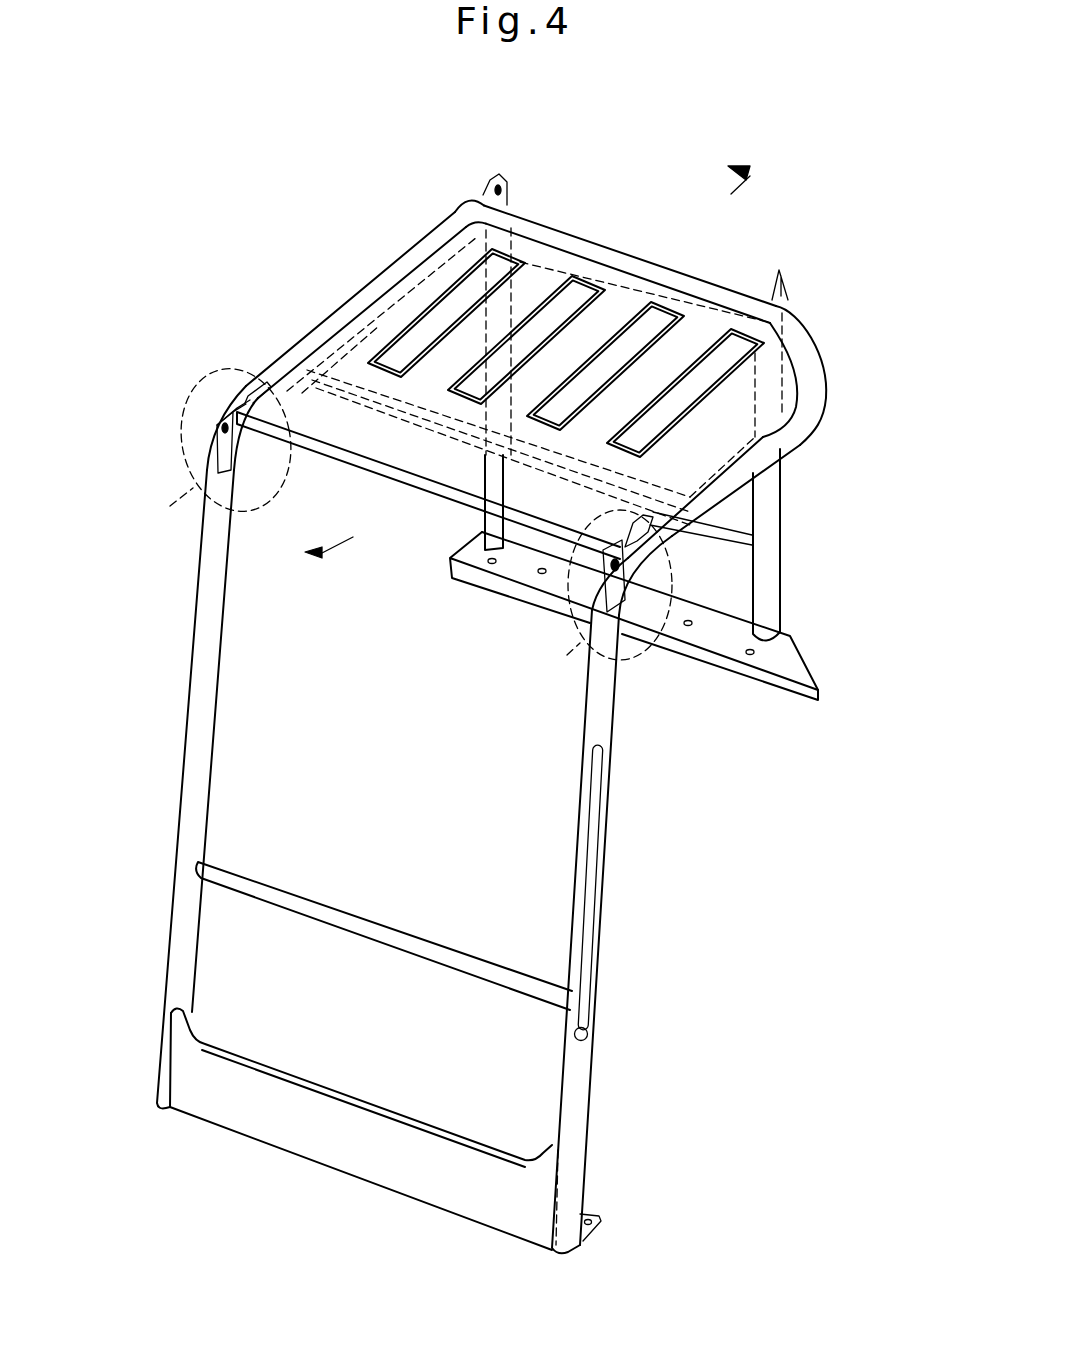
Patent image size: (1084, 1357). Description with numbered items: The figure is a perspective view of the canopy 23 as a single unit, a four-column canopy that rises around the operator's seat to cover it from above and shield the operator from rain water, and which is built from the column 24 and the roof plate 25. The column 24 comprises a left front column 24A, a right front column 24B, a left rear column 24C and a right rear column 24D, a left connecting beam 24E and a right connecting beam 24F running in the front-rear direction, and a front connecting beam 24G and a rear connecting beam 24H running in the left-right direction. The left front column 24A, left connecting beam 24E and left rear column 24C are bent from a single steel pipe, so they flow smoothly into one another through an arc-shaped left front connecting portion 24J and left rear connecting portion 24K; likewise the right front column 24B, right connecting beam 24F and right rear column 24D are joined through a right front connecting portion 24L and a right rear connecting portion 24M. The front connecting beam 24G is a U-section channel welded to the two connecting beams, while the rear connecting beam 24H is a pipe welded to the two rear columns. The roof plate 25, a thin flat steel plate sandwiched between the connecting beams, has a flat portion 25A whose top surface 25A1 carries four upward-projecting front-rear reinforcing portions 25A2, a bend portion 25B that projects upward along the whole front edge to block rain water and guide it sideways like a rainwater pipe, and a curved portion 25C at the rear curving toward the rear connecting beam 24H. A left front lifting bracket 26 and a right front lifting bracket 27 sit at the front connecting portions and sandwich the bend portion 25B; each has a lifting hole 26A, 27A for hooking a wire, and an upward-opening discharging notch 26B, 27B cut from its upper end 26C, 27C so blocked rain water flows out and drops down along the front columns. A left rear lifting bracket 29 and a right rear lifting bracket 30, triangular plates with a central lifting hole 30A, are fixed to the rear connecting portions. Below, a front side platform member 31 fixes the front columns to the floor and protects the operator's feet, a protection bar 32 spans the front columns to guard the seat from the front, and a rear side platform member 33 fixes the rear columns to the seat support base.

The canopy 23 is at (420, 238).
The column 24 is at (200, 718).
The left front column 24A is at (583, 1080).
The right front column 24B is at (185, 940).
The left rear column 24C is at (770, 571).
The right rear column 24D is at (543, 233).
The left connecting beam 24E is at (781, 447).
The right connecting beam 24F is at (357, 297).
The front connecting beam 24G is at (300, 360).
The rear connecting beam 24H is at (732, 278).
The left front connecting portion 24J is at (636, 585).
The left rear connecting portion 24K is at (790, 316).
The right front connecting portion 24L is at (242, 466).
The right rear connecting portion 24M is at (465, 203).
The roof plate 25 is at (430, 269).
The flat portion 25A is at (767, 400).
The top surface 25A1 is at (717, 433).
The reinforcing portions 25A2 is at (583, 285).
The bend portion 25B is at (428, 486).
The curved portion 25C is at (641, 267).
The left front lifting bracket 26 is at (678, 555).
The lifting hole 26A is at (610, 586).
The discharging notch 26B is at (660, 538).
The upper end 26C is at (645, 527).
The right front lifting bracket 27 is at (192, 398).
The lifting hole 27A is at (216, 425).
The discharging notch 27B is at (242, 397).
The upper end 27C is at (252, 385).
The left rear lifting bracket 29 is at (789, 284).
The right rear lifting bracket 30 is at (528, 152).
The lifting hole 30A is at (504, 183).
The front side platform member 31 is at (251, 1130).
The protection bar 32 is at (379, 927).
The rear side platform member 33 is at (778, 668).